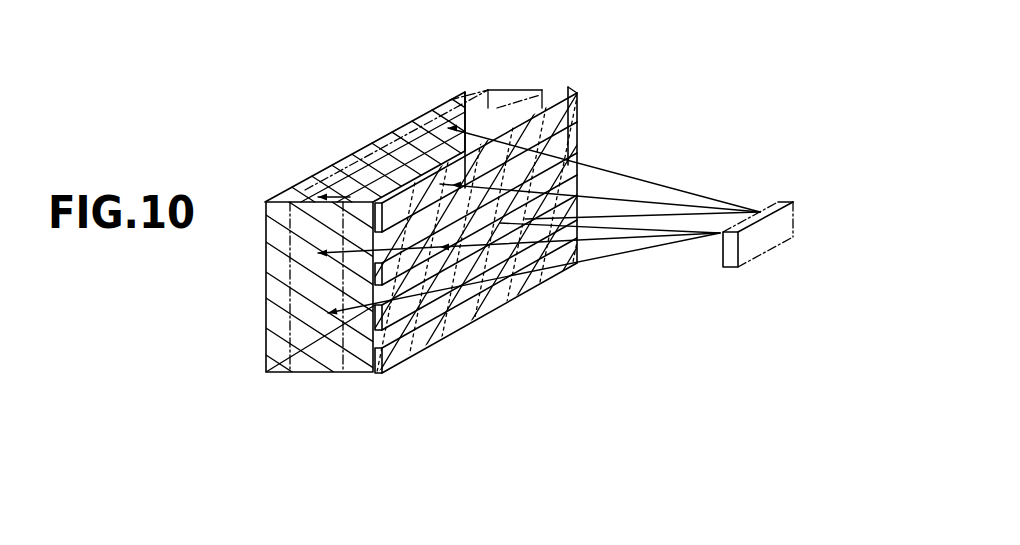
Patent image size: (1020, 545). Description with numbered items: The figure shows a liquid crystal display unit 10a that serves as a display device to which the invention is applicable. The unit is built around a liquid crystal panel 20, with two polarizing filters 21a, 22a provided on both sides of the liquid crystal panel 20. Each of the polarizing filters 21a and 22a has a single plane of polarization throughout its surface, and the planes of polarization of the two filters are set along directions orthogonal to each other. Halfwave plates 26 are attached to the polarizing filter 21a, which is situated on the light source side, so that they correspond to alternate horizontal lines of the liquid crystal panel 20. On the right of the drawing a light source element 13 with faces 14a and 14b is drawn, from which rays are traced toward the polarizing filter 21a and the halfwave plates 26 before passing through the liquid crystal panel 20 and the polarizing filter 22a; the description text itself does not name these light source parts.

The liquid crystal display unit 10a is at (345, 140).
The polarizing filter 22a is at (462, 92).
The liquid crystal panel 20 is at (500, 90).
The polarizing filter 21a is at (569, 100).
The halfwave plates 26 is at (580, 182).
The light source 13 is at (767, 236).
The light emitting top face 14a is at (777, 200).
The light source front face 14b is at (723, 244).